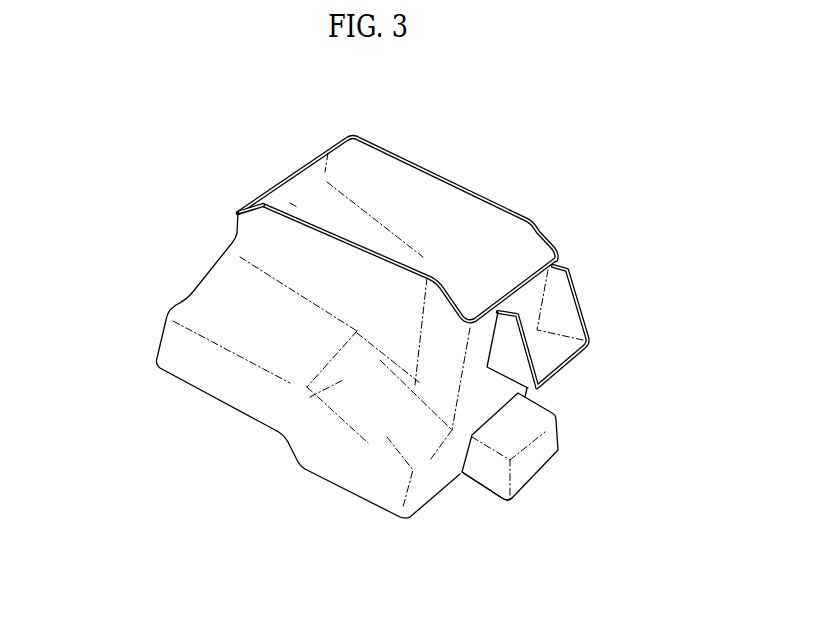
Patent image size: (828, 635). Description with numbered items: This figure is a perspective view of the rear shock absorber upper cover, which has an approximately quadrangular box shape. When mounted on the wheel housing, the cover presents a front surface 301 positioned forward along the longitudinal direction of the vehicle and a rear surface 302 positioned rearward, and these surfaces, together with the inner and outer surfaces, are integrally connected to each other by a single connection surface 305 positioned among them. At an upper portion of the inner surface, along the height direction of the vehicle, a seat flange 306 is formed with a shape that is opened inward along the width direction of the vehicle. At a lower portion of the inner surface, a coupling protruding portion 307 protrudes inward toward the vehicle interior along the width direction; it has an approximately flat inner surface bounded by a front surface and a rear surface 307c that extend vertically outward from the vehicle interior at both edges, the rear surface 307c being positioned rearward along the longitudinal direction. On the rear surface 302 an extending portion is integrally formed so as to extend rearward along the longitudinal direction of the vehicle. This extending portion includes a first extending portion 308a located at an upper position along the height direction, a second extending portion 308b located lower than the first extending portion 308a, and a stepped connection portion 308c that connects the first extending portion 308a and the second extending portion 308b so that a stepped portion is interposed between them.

The front surface 301 is at (448, 206).
The rear surface 302 is at (257, 235).
The connection surface 305 is at (318, 206).
The seat flange 306 is at (570, 372).
The coupling protruding portion 307 is at (540, 485).
The rear surface of coupling protruding portion 307c is at (488, 483).
The first extending portion 308a is at (200, 303).
The second extending portion 308b is at (385, 435).
The stepped connection portion 308c is at (317, 393).